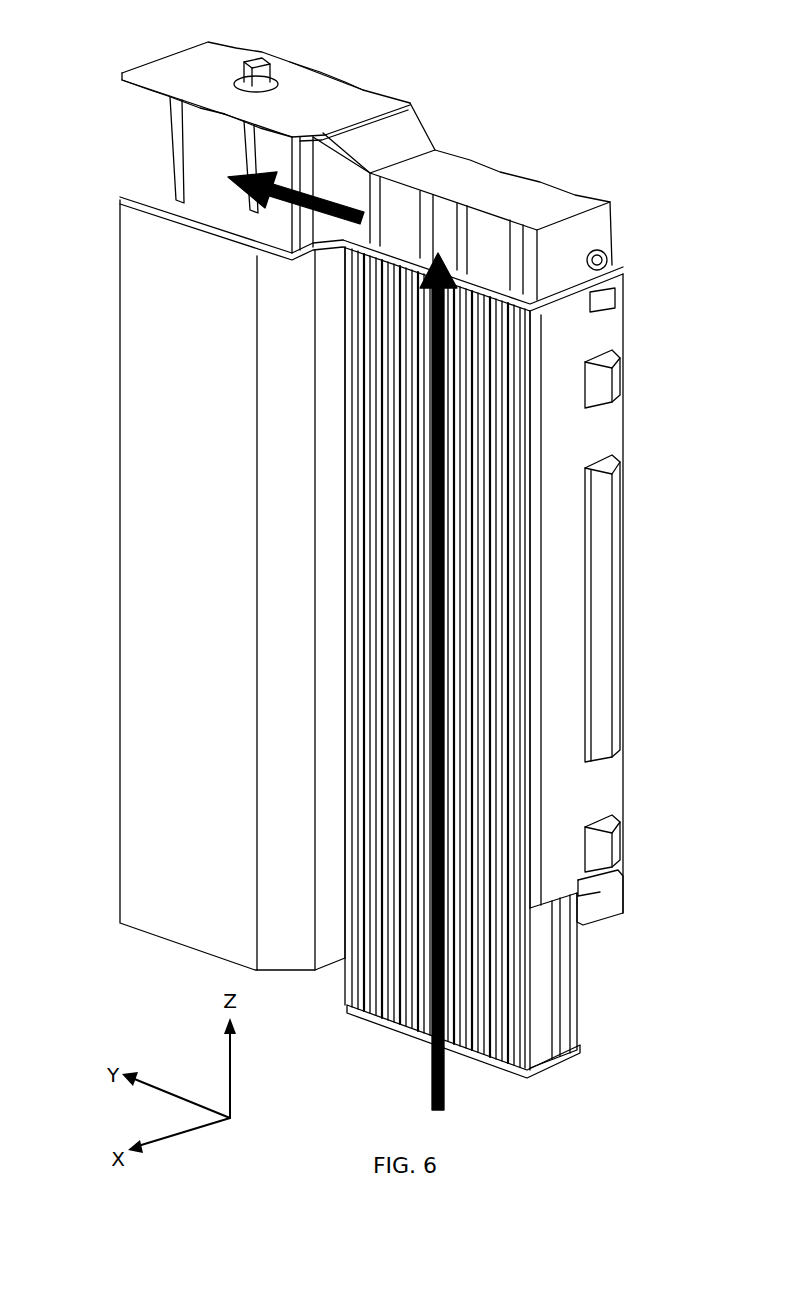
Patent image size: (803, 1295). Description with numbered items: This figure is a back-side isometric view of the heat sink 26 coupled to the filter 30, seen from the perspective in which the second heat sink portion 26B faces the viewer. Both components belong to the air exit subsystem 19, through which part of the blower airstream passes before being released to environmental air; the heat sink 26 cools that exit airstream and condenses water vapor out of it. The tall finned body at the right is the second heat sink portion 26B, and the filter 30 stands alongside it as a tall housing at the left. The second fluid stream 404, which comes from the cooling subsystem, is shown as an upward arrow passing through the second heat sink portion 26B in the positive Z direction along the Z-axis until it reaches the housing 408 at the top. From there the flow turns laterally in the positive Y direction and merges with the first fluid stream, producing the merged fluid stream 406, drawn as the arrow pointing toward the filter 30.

The air exit subsystem 19 is at (466, 64).
The filter 30 is at (143, 520).
The heat sink 26 is at (580, 452).
The second heat sink portion 26B is at (377, 1003).
The second fluid stream 404 is at (437, 604).
The merged fluid stream 406 is at (297, 187).
The housing 408 is at (543, 200).